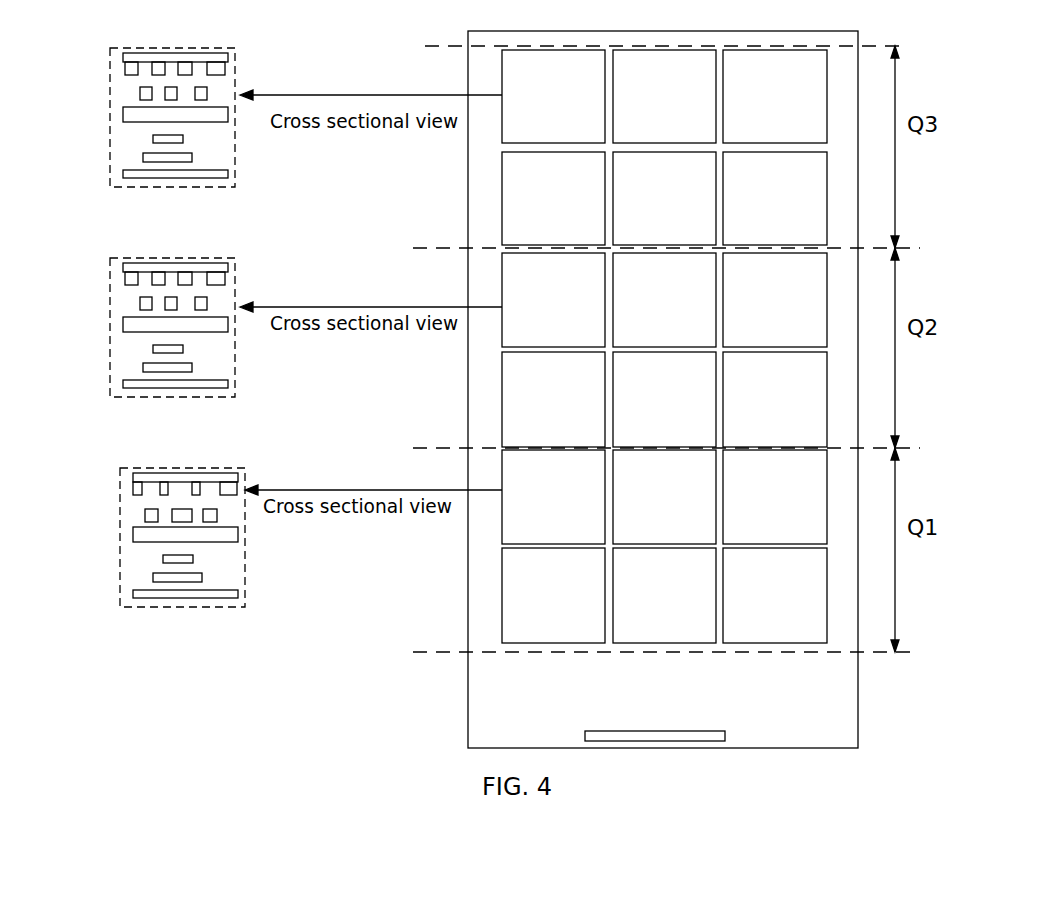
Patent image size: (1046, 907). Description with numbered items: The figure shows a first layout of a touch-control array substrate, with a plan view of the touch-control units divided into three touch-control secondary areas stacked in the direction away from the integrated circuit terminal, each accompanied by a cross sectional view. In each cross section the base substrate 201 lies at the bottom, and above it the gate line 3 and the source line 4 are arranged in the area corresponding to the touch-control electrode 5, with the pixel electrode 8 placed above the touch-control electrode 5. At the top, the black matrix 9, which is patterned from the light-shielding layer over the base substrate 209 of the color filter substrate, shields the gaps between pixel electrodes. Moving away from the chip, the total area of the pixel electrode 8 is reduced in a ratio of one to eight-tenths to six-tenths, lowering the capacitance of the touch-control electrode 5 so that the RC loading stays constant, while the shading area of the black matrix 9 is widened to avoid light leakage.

The base substrate of color filter substrate 209 is at (147, 60).
The black matrix 9 is at (130, 73).
The pixel electrode 8 is at (143, 95).
The touch-control electrode 5 is at (145, 118).
The source line 4 is at (153, 137).
The gate line 3 is at (145, 158).
The base substrate 201 is at (112, 172).